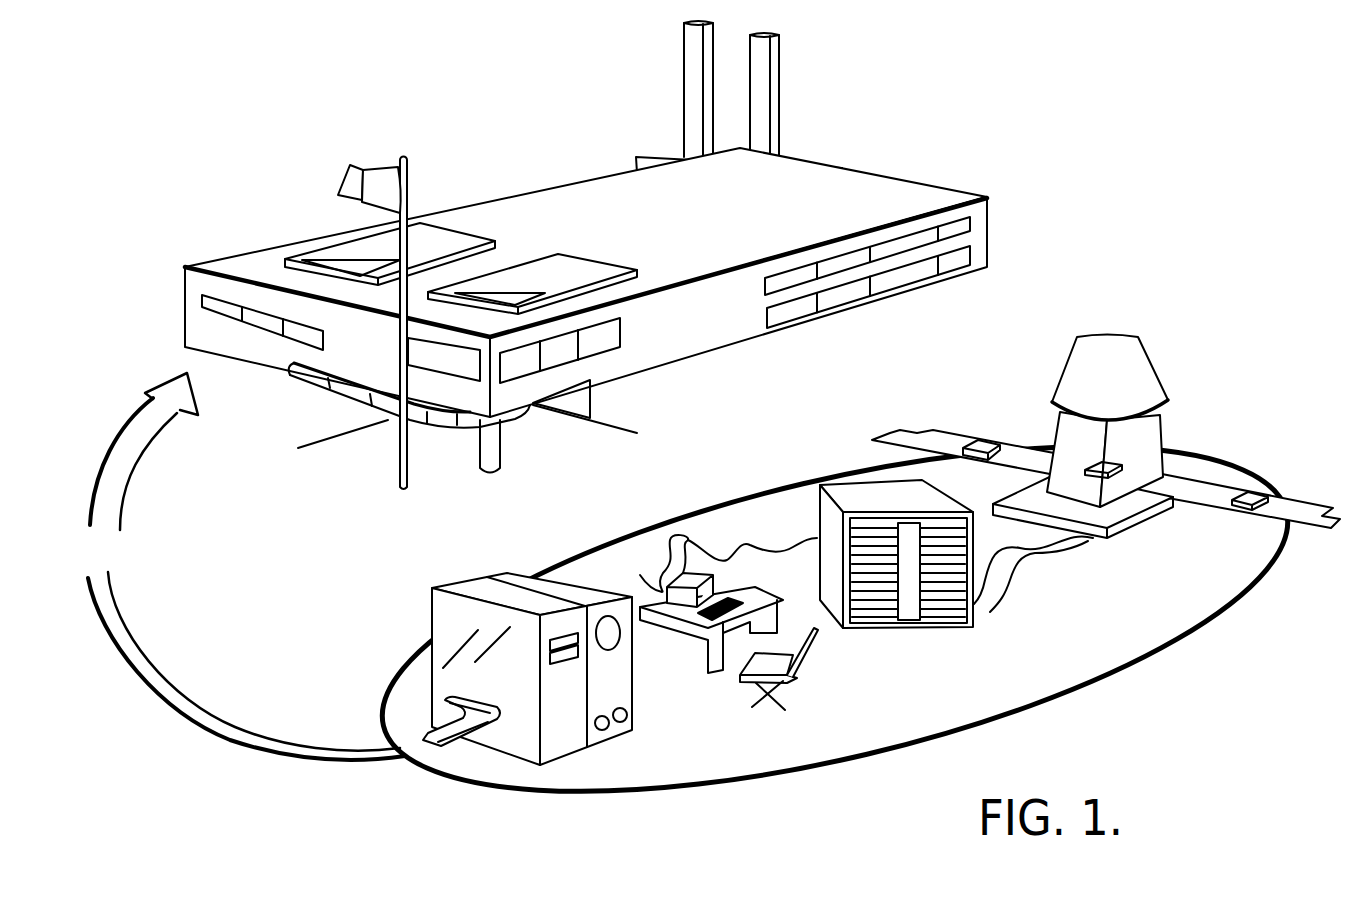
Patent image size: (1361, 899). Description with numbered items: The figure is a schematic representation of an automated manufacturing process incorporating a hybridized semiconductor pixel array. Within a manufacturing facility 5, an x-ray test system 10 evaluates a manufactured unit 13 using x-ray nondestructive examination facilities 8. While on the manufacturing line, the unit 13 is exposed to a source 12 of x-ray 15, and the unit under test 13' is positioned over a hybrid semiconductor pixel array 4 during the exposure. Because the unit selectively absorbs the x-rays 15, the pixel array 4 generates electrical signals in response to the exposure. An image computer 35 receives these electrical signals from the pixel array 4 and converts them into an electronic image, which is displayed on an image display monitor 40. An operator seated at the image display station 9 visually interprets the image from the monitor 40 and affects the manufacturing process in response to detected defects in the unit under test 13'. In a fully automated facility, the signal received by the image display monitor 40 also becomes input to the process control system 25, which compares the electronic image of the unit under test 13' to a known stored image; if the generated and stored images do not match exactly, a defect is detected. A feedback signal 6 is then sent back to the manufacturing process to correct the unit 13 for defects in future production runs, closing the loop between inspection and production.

The hybrid semiconductor pixel array 4 is at (1127, 498).
The manufacturing facility 5 is at (1087, 63).
The feedback signal 6 is at (92, 613).
The x-ray nondestructive examination facilities 8 is at (1122, 520).
The image display station 9 is at (797, 660).
The x-ray test system 10 is at (302, 834).
The source 12 is at (1105, 343).
The manufactured unit 13 is at (983, 407).
The unit under test 13' is at (1217, 434).
The x-ray 15 is at (1167, 437).
The process control system 25 is at (507, 573).
The image computer 35 is at (957, 625).
The image display monitor 40 is at (683, 573).